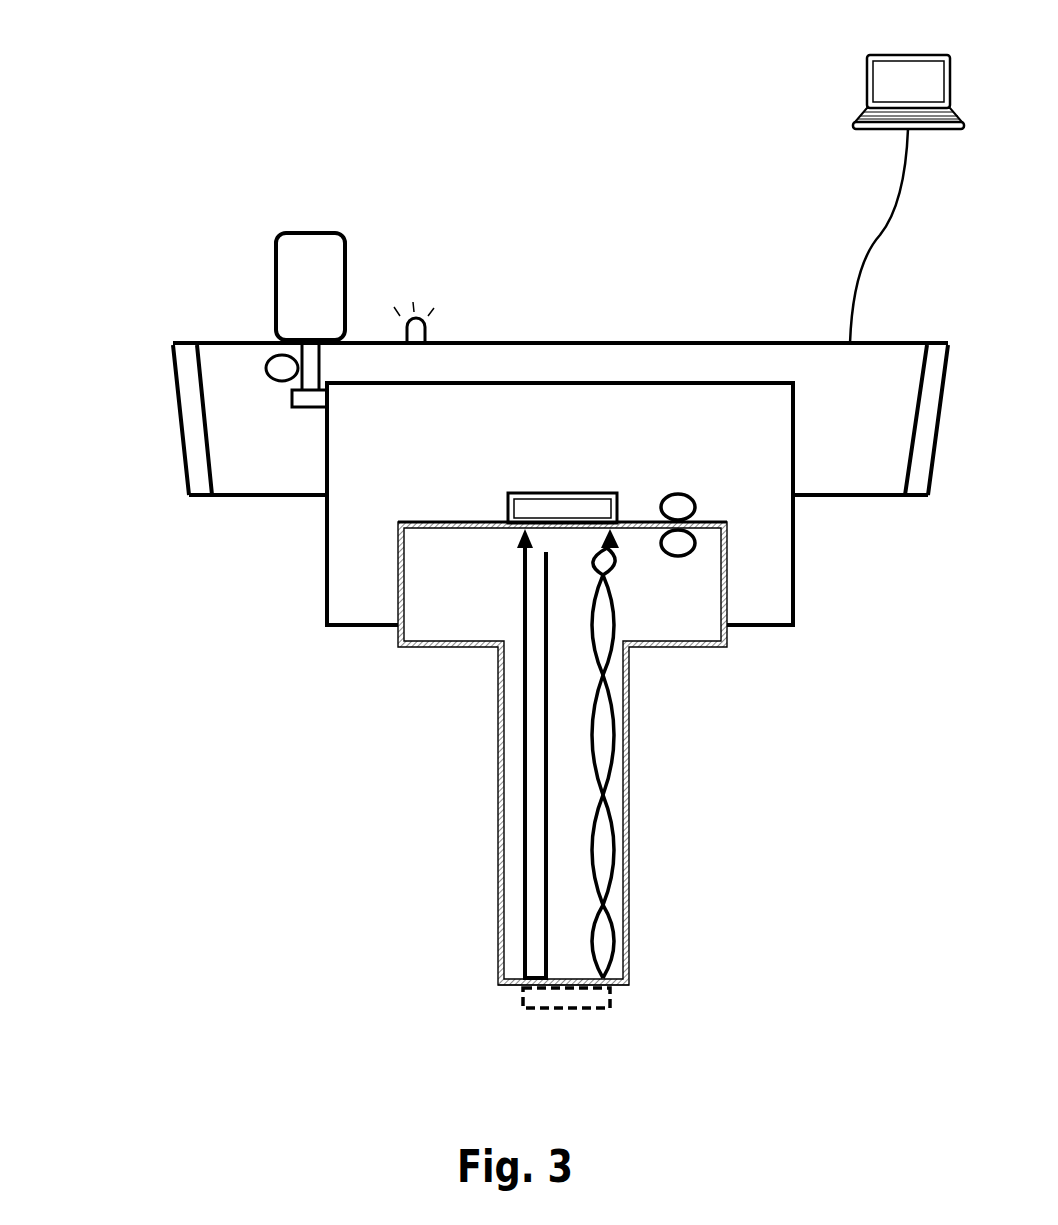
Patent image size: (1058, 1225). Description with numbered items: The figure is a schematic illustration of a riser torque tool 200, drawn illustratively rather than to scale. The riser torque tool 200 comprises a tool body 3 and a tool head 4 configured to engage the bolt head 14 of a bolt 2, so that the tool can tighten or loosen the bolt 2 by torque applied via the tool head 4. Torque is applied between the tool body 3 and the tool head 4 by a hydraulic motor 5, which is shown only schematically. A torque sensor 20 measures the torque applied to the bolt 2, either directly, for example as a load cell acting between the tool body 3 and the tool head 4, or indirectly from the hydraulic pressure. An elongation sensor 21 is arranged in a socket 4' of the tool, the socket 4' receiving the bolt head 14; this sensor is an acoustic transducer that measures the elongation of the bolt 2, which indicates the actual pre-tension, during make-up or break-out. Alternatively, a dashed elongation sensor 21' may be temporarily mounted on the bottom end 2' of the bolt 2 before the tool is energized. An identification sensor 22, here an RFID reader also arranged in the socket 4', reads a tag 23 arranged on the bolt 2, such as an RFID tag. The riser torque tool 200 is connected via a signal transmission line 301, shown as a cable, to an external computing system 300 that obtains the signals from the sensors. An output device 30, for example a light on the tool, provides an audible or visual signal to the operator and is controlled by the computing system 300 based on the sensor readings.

The riser torque tool 200 is at (363, 133).
The computing system 300 is at (806, 94).
The signal transmission line 301 is at (866, 233).
The tool body 3 is at (180, 425).
The hydraulic motor 5 is at (276, 275).
The torque sensor 20 is at (275, 385).
The output device 30 is at (427, 329).
The tool head 4 is at (619, 504).
The socket 4' is at (793, 592).
The bolt head 14 is at (705, 650).
The bolt 2 is at (621, 753).
The elongation sensor 21 is at (549, 468).
The elongation sensor 21' is at (533, 1023).
The identification sensor 22 is at (672, 493).
The tag 23 is at (675, 558).
The bottom end 2' is at (631, 1019).